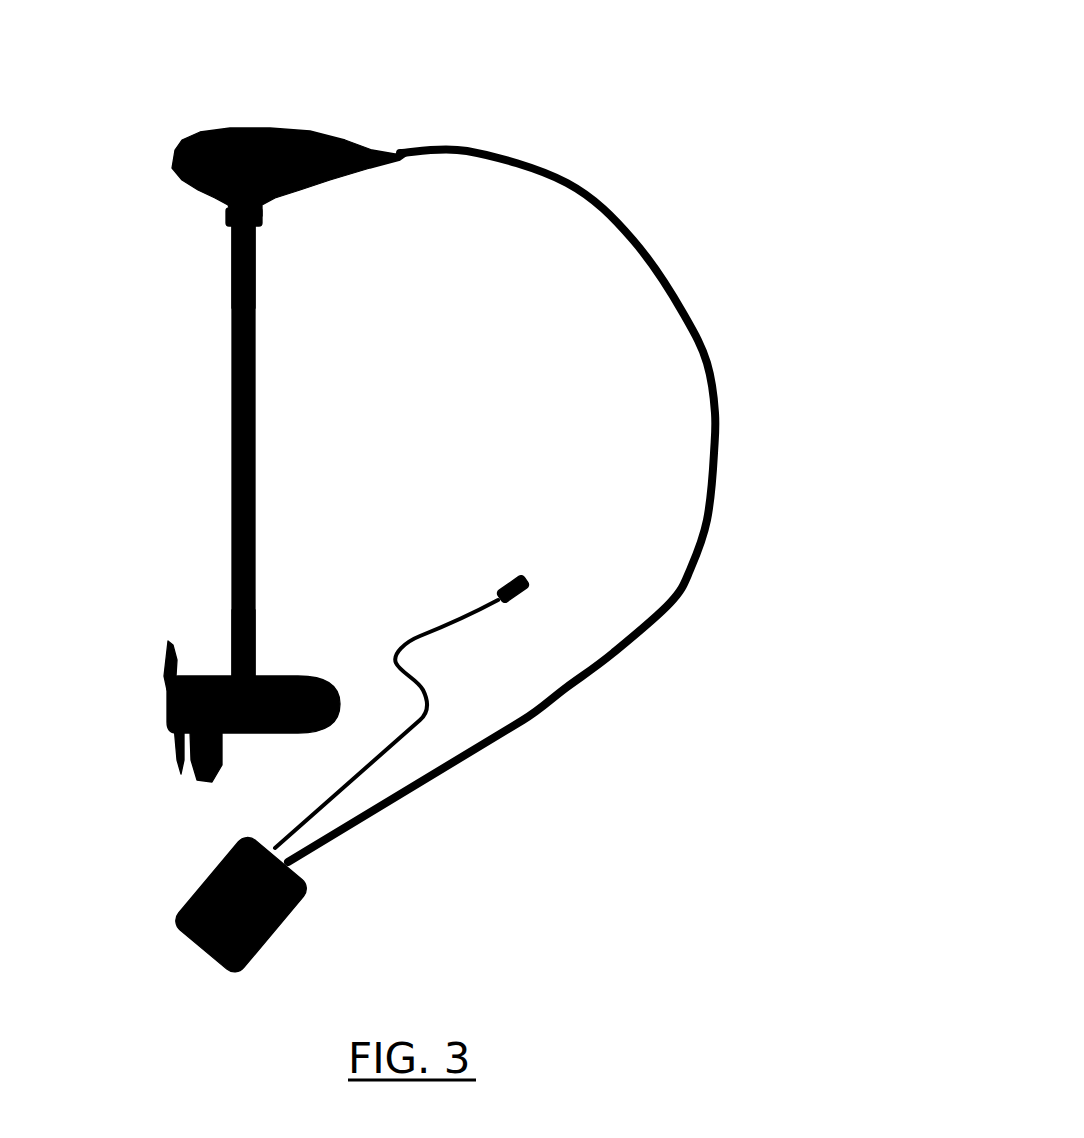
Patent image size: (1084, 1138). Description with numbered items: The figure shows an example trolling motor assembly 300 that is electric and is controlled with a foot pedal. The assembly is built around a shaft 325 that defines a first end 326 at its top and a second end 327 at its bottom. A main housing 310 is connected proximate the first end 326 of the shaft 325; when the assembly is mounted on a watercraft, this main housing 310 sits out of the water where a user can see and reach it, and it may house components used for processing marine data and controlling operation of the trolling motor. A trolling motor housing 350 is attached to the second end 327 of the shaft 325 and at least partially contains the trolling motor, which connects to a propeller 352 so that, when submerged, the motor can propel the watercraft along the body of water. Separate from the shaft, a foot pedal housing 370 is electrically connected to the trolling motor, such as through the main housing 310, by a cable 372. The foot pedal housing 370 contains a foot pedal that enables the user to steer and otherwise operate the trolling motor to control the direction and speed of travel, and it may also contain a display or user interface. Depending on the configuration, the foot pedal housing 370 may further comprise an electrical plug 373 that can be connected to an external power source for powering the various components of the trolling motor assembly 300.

The trolling motor assembly 300 is at (695, 93).
The main housing 310 is at (212, 140).
The shaft 325 is at (247, 425).
The first end 326 is at (210, 245).
The second end 327 is at (223, 648).
The trolling motor housing 350 is at (283, 678).
The propeller 352 is at (163, 648).
The foot pedal housing 370 is at (300, 900).
The cable 372 is at (715, 453).
The electrical plug 373 is at (512, 577).